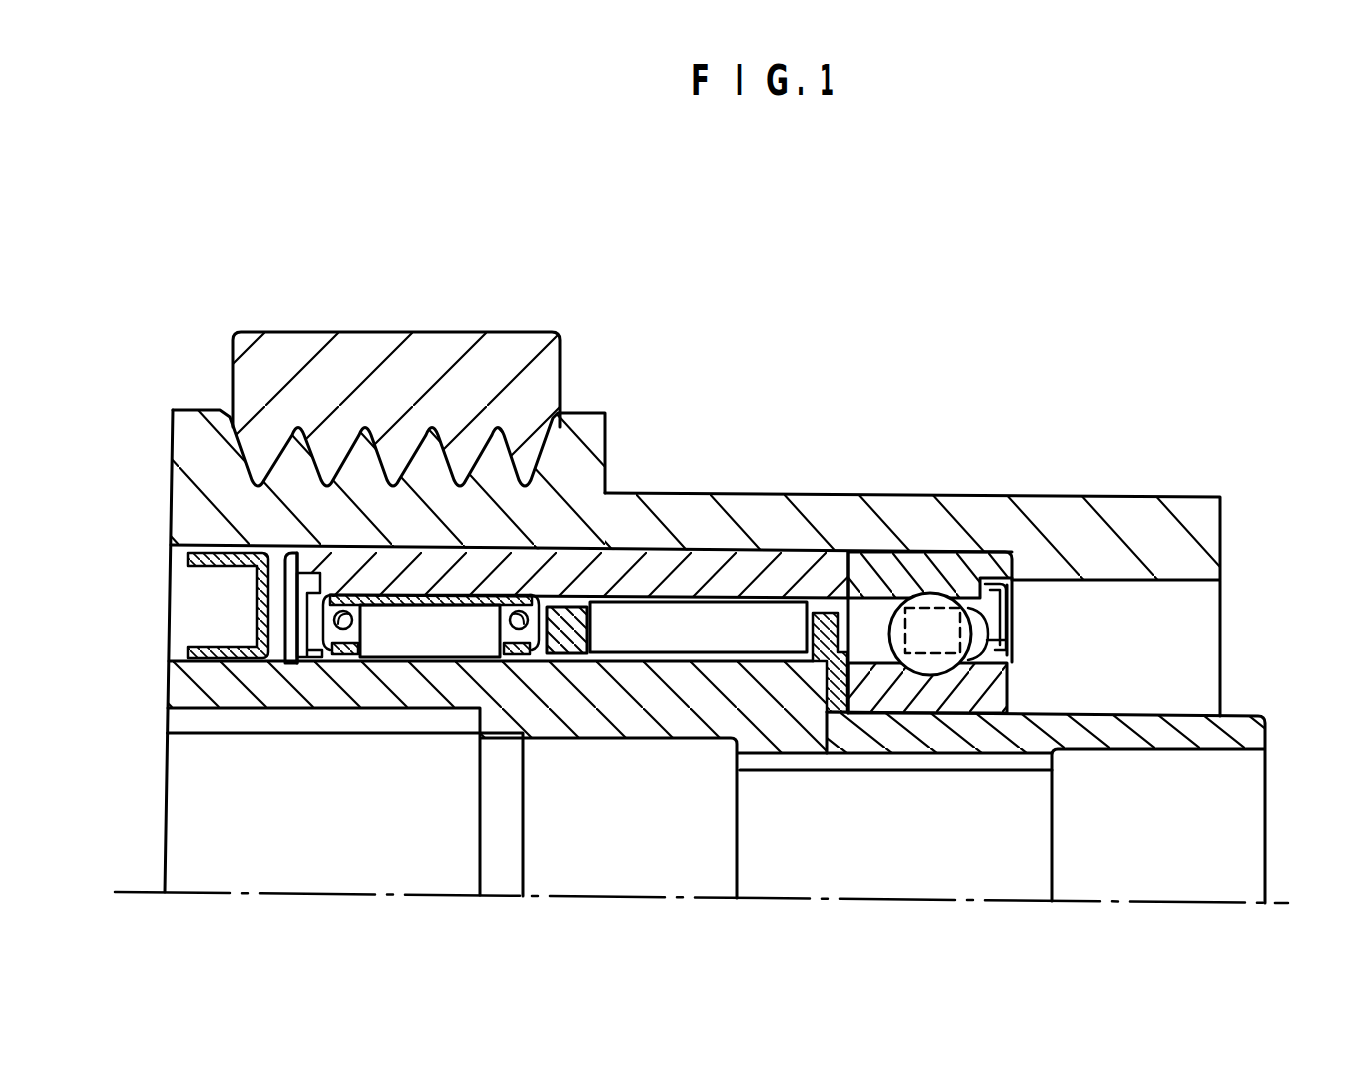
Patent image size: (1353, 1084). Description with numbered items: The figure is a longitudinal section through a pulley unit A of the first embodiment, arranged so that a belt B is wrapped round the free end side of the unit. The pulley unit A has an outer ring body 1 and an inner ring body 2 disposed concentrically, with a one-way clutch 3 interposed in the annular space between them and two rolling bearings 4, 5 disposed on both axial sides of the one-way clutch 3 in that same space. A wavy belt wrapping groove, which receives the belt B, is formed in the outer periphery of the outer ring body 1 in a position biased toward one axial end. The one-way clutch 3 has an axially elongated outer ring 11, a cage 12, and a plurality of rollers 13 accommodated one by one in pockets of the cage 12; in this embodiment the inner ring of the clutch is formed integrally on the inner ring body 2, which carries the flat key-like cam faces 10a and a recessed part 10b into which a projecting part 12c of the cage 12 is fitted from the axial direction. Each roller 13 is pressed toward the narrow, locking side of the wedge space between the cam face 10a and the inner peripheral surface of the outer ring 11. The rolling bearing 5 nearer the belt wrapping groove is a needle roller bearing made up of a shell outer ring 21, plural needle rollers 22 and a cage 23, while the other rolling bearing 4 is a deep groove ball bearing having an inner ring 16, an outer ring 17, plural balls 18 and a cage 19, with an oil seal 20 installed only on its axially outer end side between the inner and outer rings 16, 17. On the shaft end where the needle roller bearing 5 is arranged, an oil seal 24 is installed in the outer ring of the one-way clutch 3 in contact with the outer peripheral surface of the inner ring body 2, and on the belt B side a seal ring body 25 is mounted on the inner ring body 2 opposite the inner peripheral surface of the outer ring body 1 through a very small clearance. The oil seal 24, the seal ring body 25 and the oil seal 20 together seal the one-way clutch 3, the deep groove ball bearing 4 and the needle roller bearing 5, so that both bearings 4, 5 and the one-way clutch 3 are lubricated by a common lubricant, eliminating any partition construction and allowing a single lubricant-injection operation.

The outer ring body 1 is at (1188, 515).
The inner ring body 2 is at (1250, 740).
The one-way clutch 3 is at (603, 550).
The rolling bearing 4 is at (972, 606).
The rolling bearing 5 is at (412, 515).
The cam face 10a is at (682, 630).
The recessed part 10b is at (840, 690).
The outer ring 11 is at (562, 550).
The cage 12 is at (568, 612).
The projecting part 12c is at (851, 668).
The roller 13 is at (636, 615).
The inner ring 16 is at (984, 705).
The outer ring 17 is at (991, 563).
The ball 18 is at (922, 600).
The cage 19 is at (1013, 638).
The oil seal 20 is at (1013, 601).
The shell outer ring 21 is at (404, 597).
The needle roller 22 is at (430, 707).
The cage 23 is at (333, 660).
The oil seal 24 is at (290, 612).
The seal ring body 25 is at (193, 652).
The pulley unit A is at (966, 312).
The belt B is at (352, 348).